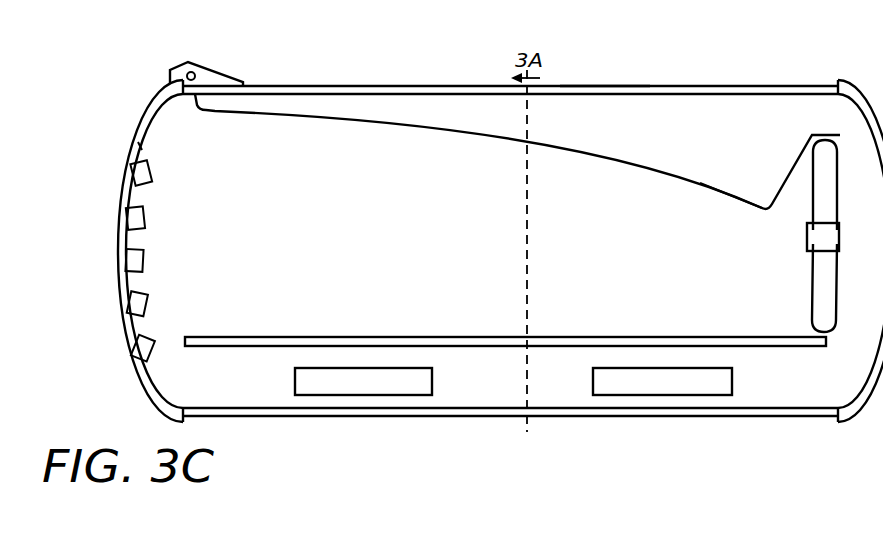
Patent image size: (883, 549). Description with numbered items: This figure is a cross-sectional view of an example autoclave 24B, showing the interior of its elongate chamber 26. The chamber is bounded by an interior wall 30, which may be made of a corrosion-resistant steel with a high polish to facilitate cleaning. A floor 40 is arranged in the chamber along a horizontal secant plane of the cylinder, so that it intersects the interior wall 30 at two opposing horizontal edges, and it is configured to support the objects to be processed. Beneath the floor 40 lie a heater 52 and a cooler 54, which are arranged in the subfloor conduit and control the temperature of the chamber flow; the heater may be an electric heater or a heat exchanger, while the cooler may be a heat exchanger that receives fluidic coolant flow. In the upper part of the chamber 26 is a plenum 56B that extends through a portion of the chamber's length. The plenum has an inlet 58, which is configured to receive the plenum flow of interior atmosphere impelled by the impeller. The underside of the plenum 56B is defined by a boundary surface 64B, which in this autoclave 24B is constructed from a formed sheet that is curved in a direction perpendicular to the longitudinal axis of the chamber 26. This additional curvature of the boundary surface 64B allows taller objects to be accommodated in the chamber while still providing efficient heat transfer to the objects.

The autoclave 24B is at (348, 52).
The elongate chamber 26 is at (610, 70).
The interior wall 30 is at (812, 407).
The floor 40 is at (253, 337).
The heater 52 is at (363, 381).
The cooler 54 is at (662, 381).
The plenum 56B is at (478, 151).
The inlet 58 is at (808, 96).
The boundary surface 64B is at (733, 198).